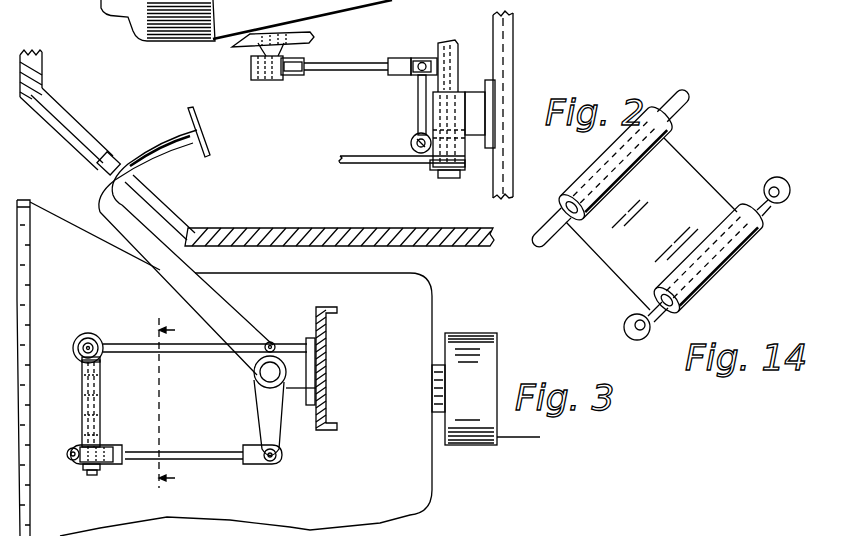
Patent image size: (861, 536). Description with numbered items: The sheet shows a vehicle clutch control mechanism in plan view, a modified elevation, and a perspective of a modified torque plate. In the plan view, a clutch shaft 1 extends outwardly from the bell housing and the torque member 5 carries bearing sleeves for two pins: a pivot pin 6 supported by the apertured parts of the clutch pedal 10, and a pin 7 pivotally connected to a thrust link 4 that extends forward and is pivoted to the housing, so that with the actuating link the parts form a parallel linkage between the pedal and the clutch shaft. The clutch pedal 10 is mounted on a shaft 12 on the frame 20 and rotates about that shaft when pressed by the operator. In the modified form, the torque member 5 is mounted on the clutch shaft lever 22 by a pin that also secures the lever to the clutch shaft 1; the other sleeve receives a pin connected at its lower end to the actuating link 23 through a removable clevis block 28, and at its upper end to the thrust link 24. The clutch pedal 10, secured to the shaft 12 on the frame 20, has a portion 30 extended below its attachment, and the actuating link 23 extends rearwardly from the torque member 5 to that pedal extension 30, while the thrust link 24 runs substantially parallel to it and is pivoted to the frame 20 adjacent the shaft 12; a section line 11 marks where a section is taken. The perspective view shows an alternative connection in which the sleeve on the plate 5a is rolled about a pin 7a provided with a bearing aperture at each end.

In FIG. 2, the clutch shaft 1 is at (264, 84).
In FIG. 2, the thrust link 4 is at (333, 66).
In FIG. 2, the torque member 5 is at (420, 100).
In FIG. 2, the pivot pin 6 is at (411, 140).
In FIG. 2, the pin 7 is at (419, 60).
In FIG. 2, the shaft 12 is at (453, 40).
In FIG. 3, the shaft 12 is at (263, 370).
In FIG. 2, the frame 20 is at (507, 46).
In FIG. 3, the frame 20 is at (326, 368).
In FIG. 3, the clutch pedal 10 is at (218, 308).
In FIG. 3, the section line 11 is at (151, 405).
In FIG. 3, the clutch shaft lever 22 is at (99, 381).
In FIG. 3, the actuating link 23 is at (217, 460).
In FIG. 3, the thrust link 24 is at (186, 353).
In FIG. 3, the clevis block 28 is at (107, 466).
In FIG. 3, the pedal extension 30 is at (268, 414).
In FIG. 14, the torque plate 5a is at (677, 177).
In FIG. 14, the pin 7a is at (779, 204).